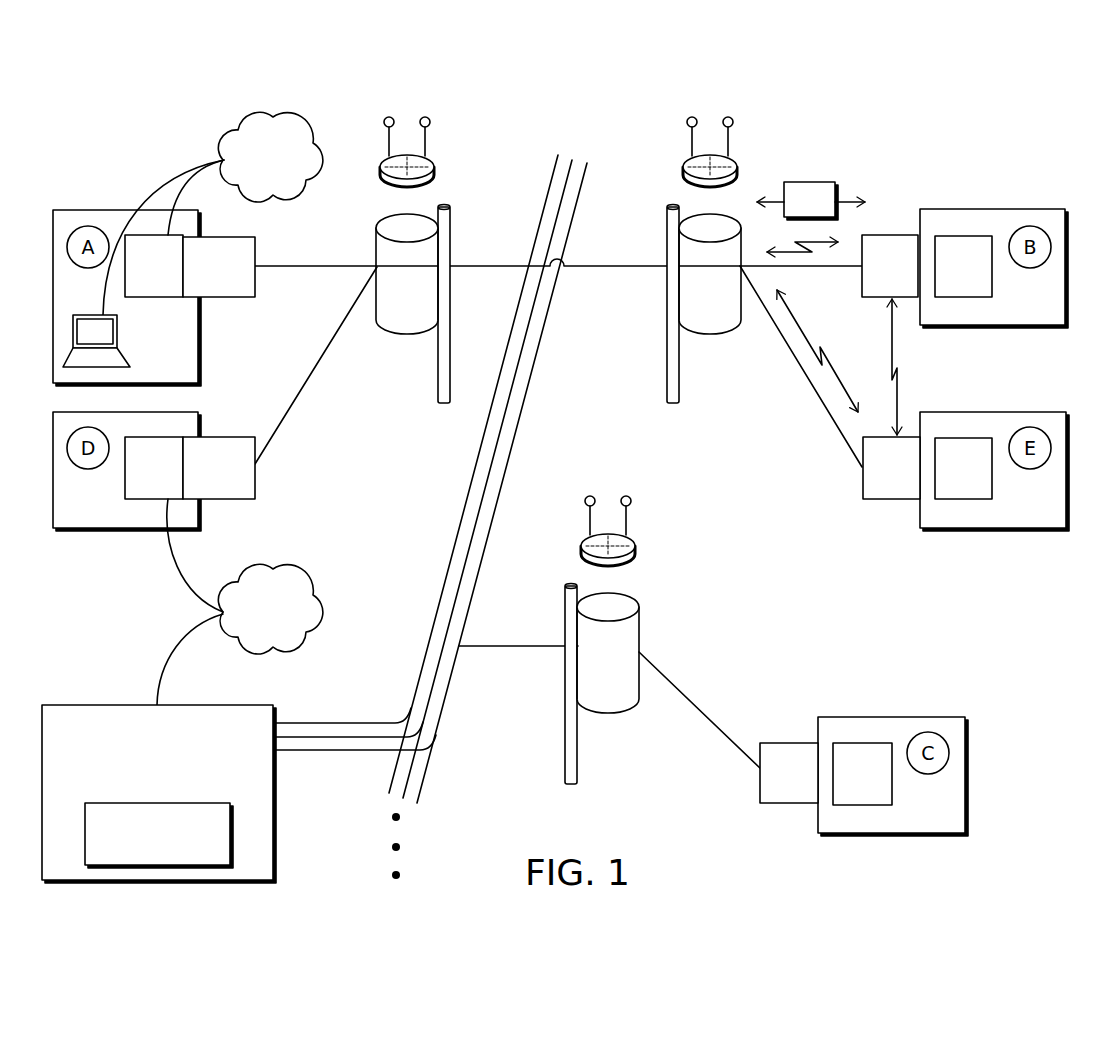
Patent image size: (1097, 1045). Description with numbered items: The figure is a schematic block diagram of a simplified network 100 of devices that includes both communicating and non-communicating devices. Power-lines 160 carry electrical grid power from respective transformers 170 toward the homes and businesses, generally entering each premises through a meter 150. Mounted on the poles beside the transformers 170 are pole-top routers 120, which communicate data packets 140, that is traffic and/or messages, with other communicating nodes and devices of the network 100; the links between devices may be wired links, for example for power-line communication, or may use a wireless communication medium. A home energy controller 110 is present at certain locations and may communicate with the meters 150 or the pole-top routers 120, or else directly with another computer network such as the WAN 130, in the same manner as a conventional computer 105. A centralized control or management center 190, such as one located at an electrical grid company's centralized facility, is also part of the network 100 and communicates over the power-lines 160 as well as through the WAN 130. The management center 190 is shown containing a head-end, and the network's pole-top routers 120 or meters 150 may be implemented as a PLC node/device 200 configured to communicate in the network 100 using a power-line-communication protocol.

The network 100 is at (1026, 171).
The computer 105 is at (122, 353).
The home energy controller 110 is at (139, 289).
The pole-top router 120 is at (433, 158).
The WAN 130 is at (253, 179).
The data packets 140 is at (794, 210).
The meter 150 is at (204, 291).
The power-line 160 is at (340, 268).
The transformer 170 is at (405, 326).
The management center 190 is at (142, 790).
The PLC node/device 200 is at (142, 858).